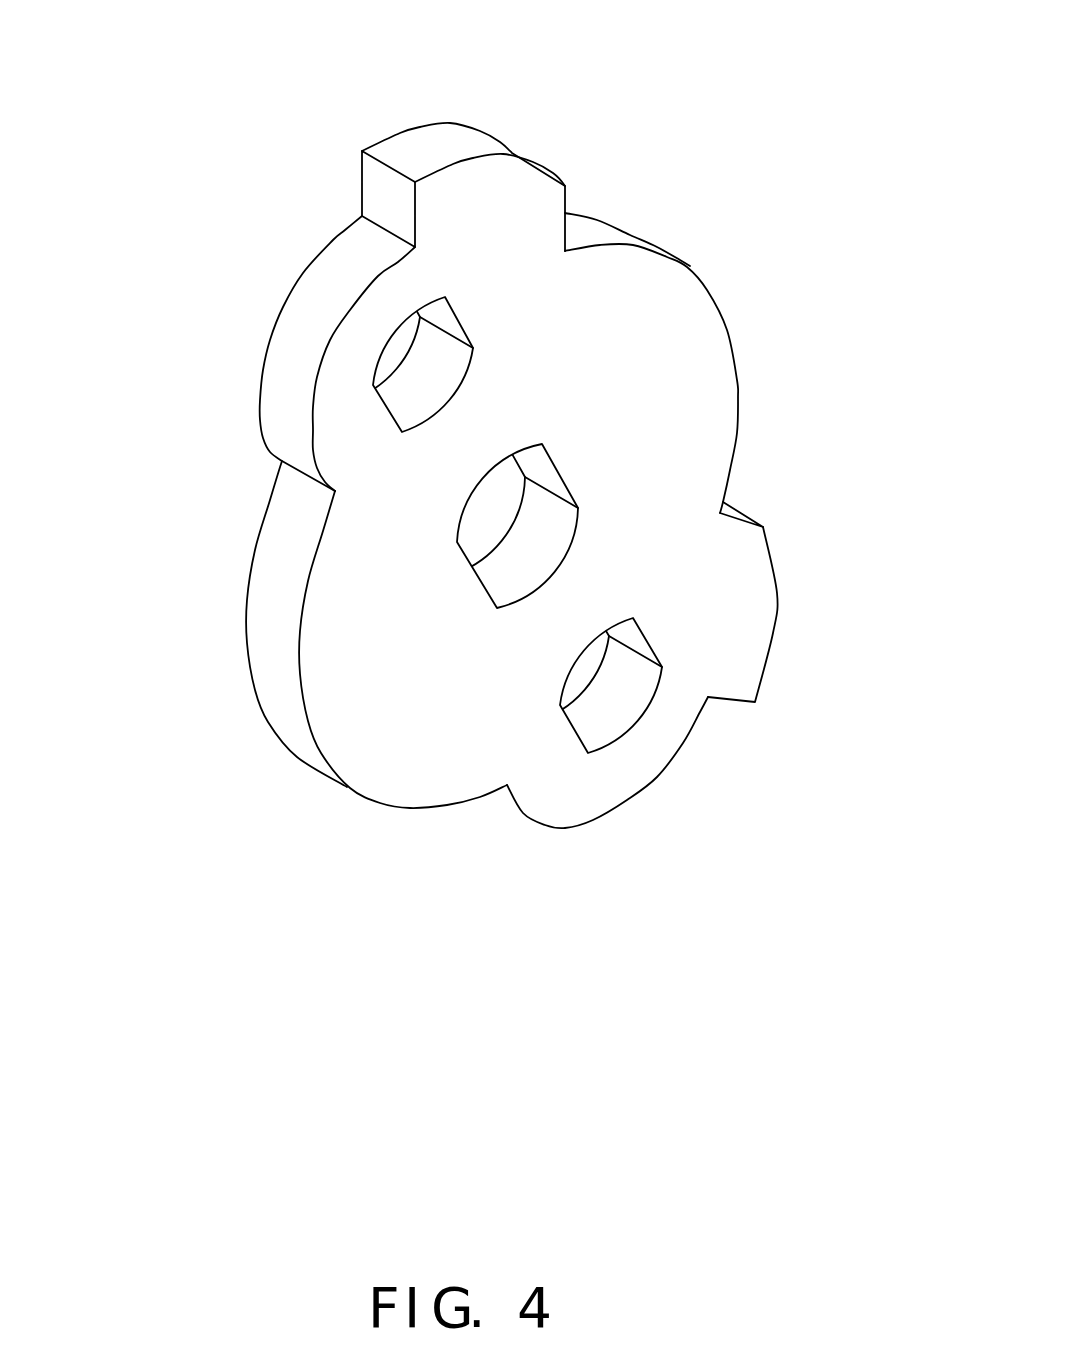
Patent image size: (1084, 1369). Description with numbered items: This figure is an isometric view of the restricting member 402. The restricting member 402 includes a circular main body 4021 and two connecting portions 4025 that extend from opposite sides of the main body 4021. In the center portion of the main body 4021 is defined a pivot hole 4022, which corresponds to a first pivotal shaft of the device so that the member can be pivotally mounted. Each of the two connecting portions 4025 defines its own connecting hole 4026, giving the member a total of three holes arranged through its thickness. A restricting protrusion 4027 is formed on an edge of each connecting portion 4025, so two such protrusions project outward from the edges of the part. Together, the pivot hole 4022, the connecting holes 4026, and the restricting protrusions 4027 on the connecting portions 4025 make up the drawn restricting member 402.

The restricting member 402 is at (590, 57).
The main body 4021 is at (654, 312).
The pivot hole 4022 is at (482, 523).
The connecting portion 4025 is at (598, 795).
The connecting hole 4026 is at (630, 707).
The restricting protrusion 4027 is at (398, 147).